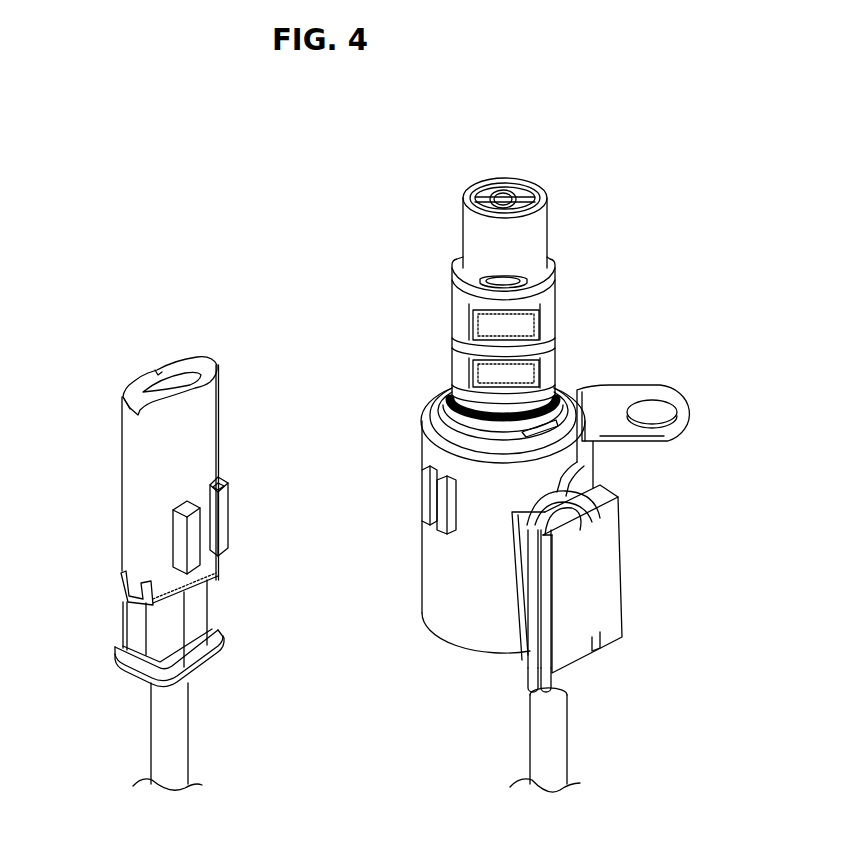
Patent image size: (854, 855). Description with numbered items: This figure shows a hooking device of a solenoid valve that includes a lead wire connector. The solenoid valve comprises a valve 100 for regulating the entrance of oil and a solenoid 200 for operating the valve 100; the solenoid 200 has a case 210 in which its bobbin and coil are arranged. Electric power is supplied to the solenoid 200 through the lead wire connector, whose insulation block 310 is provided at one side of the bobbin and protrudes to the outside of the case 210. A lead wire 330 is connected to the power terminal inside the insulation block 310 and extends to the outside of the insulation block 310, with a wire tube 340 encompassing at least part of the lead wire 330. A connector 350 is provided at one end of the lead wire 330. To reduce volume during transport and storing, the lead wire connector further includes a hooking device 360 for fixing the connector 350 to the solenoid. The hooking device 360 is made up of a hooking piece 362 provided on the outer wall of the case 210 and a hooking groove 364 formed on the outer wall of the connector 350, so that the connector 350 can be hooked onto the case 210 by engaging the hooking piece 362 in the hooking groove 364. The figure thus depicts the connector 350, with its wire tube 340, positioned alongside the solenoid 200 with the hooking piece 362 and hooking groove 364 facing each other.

The valve 100 is at (547, 186).
The solenoid 200 is at (440, 652).
The case 210 is at (421, 448).
The insulation block 310 is at (610, 570).
The lead wire 330 is at (532, 672).
The wire tube 340 is at (570, 745).
The connector 350 is at (121, 495).
The hooking device 360 is at (333, 546).
The hooking piece 362 is at (427, 503).
The hooking groove 364 is at (258, 531).